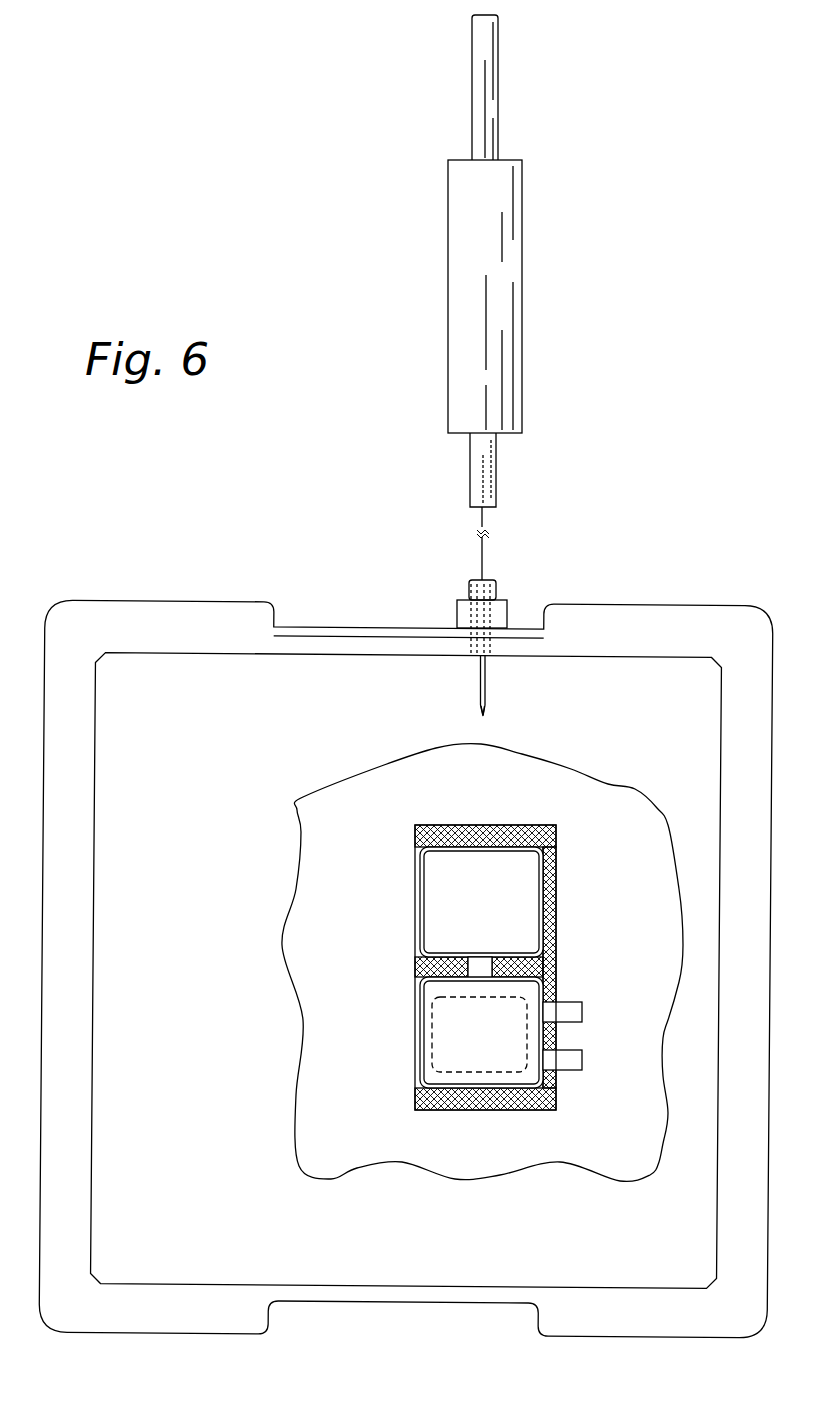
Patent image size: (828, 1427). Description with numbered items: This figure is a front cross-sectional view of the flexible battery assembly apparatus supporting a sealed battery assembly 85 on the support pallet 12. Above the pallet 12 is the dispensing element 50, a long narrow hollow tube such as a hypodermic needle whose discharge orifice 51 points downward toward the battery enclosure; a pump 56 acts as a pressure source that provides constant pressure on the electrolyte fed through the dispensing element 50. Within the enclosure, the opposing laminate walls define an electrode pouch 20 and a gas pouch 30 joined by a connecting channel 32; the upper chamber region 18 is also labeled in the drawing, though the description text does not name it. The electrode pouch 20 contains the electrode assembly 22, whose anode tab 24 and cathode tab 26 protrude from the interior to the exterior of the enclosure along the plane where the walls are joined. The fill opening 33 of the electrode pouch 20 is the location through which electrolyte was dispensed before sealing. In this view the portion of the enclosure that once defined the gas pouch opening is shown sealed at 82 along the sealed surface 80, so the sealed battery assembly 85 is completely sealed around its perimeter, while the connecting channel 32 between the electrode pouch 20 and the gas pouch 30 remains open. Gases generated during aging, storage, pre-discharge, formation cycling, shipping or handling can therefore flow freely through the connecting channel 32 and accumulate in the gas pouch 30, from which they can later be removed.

The support pallet 12 is at (695, 622).
The first chamber (fuel reservoir) 18 is at (415, 894).
The electrode pouch 20 is at (454, 1036).
The electrode assembly 22 is at (432, 1020).
The anode tab 24 is at (582, 1012).
The cathode tab 26 is at (582, 1060).
The gas pouch 30 is at (449, 924).
The connecting channel 32 is at (487, 965).
The fill opening 33 is at (478, 982).
The dispensing element 50 is at (480, 680).
The discharge orifice 51 is at (493, 717).
The pump 56 is at (512, 332).
The sealed surface 80 is at (557, 875).
The seal of gas pouch opening 82 is at (497, 840).
The sealed battery assembly 85 is at (486, 814).